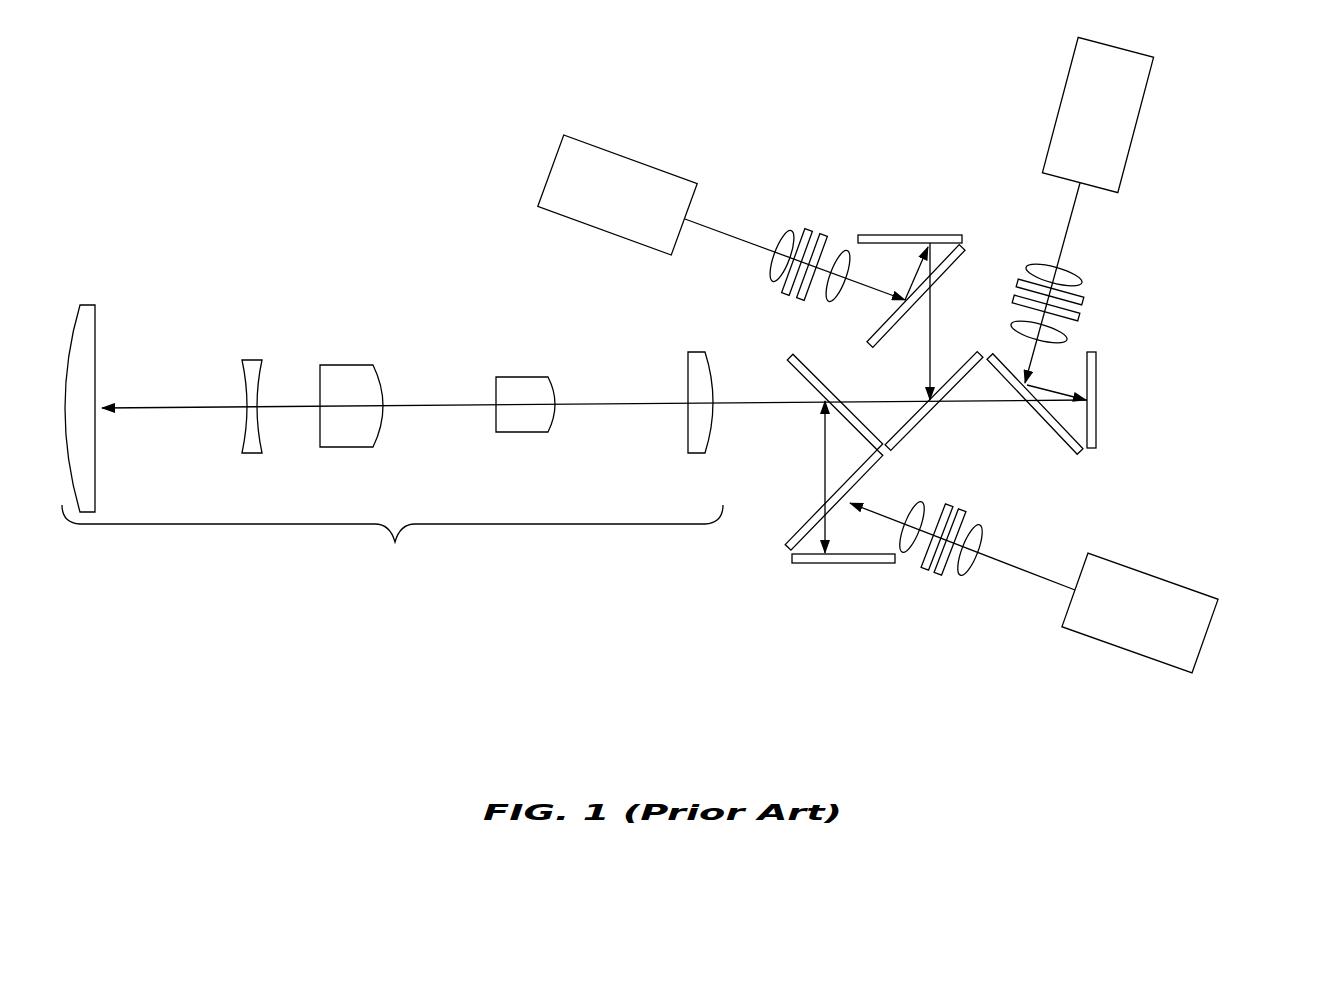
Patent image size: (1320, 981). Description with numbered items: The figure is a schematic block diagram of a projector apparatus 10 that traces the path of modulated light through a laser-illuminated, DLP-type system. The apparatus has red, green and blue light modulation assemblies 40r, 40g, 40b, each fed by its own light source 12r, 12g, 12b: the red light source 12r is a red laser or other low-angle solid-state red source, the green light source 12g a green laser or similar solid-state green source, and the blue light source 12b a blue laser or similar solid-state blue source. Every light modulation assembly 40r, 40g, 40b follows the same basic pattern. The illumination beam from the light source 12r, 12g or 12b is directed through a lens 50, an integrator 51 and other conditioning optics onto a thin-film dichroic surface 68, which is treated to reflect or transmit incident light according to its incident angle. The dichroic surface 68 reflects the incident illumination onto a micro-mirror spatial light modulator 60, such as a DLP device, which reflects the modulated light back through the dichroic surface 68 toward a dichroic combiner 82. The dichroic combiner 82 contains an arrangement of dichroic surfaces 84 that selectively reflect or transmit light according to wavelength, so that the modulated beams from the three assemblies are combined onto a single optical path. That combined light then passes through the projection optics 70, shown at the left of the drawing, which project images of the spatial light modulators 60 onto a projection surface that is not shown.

The projector apparatus 10 is at (259, 90).
The red light source 12r is at (637, 157).
The green light source 12g is at (1060, 100).
The blue light source 12b is at (1123, 652).
The red light modulation assembly 40r is at (718, 103).
The green light modulation assembly 40g is at (1217, 157).
The blue light modulation assembly 40b is at (1152, 533).
The lens 50 is at (786, 232).
The integrator 51 is at (810, 230).
The micro-mirror spatial light modulator 60 is at (900, 236).
The dichroic surface 68 is at (888, 338).
The projection optics 70 is at (392, 443).
The dichroic combiner 82 is at (778, 332).
The dichroic surfaces 84 is at (815, 366).